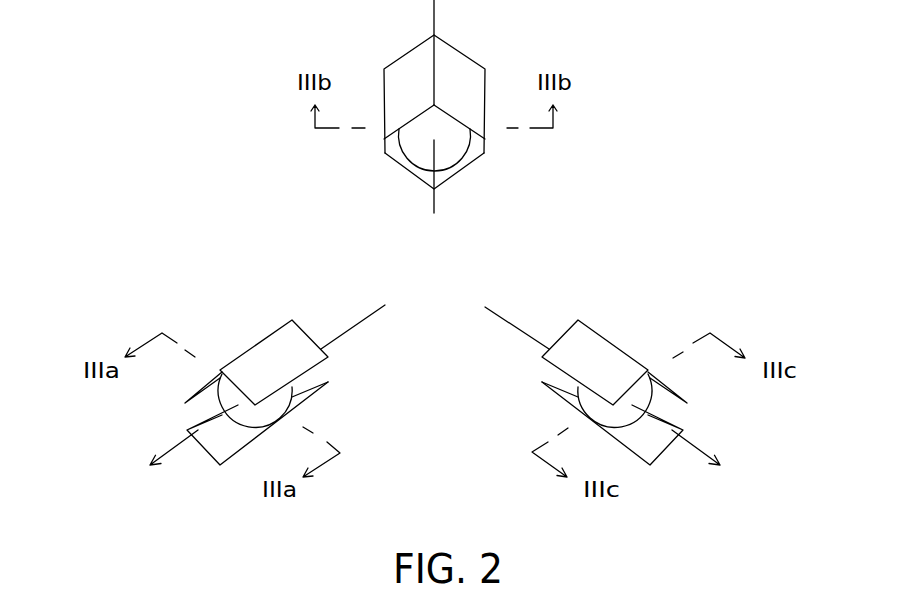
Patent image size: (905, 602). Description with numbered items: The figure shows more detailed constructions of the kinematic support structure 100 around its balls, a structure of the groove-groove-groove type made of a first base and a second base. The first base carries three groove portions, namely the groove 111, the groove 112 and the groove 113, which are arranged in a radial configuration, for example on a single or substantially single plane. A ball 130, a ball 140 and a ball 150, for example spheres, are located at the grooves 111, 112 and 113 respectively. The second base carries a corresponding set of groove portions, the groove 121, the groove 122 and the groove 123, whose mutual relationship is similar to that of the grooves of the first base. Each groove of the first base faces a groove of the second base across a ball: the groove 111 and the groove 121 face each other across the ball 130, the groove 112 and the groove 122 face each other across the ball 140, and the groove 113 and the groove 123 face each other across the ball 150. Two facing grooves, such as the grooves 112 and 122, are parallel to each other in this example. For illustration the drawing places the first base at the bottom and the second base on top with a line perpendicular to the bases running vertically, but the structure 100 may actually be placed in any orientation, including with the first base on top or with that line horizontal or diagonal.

The kinematic support structure 100 is at (191, 102).
The groove 111 is at (218, 440).
The groove 112 is at (461, 159).
The groove 113 is at (657, 443).
The groove 121 is at (215, 380).
The groove 122 is at (465, 117).
The groove 123 is at (650, 377).
The ball 130 is at (318, 380).
The ball 140 is at (417, 143).
The ball 150 is at (580, 388).